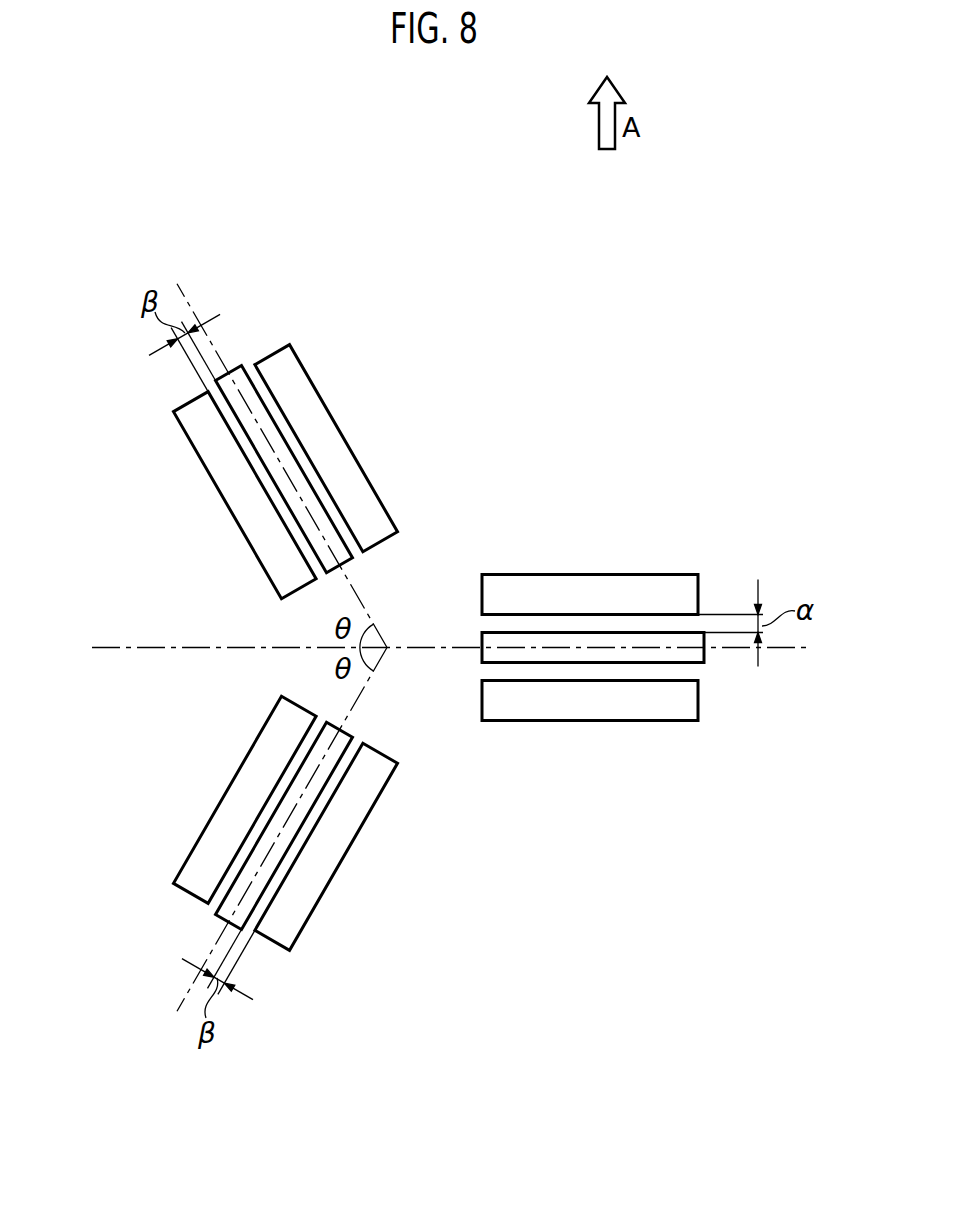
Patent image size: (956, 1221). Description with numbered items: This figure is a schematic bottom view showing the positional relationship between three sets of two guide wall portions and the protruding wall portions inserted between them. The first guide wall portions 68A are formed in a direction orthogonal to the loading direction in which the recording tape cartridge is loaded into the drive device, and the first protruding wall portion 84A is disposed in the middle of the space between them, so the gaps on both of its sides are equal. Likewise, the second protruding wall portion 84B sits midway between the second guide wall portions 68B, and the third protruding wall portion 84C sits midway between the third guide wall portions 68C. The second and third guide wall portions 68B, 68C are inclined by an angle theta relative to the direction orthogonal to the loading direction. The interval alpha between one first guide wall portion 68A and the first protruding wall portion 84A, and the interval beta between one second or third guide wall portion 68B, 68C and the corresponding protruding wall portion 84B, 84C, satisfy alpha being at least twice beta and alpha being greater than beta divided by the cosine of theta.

The first guide wall portions 68A is at (597, 575).
The second guide wall portions 68B is at (338, 431).
The third guide wall portions 68C is at (223, 798).
The first protruding wall portion 84A is at (702, 663).
The second protruding wall portion 84B is at (243, 366).
The third protruding wall portion 84C is at (213, 912).